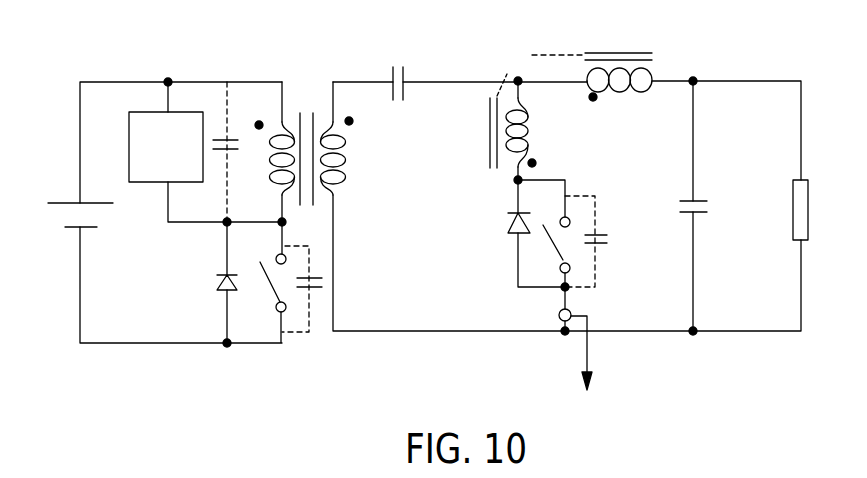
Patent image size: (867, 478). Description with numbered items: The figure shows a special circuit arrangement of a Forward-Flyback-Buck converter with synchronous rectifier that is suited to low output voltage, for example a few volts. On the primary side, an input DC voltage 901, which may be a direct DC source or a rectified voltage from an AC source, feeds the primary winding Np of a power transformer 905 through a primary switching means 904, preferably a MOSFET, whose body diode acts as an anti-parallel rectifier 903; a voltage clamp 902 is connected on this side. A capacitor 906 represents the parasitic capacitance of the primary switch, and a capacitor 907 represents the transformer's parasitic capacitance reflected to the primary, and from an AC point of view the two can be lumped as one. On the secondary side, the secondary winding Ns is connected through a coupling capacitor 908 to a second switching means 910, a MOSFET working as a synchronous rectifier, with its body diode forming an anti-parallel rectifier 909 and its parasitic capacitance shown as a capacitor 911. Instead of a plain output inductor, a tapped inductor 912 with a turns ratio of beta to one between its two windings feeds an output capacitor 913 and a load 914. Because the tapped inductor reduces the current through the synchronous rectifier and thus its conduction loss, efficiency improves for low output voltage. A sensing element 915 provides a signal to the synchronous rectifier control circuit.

The input DC voltage 901 is at (68, 194).
The voltage clamp 902 is at (182, 112).
The anti-parallel rectifier 903 is at (213, 295).
The primary switching means 904 is at (272, 308).
The power transformer 905 is at (320, 110).
The parasitic capacitance of the primary switching means 906 is at (221, 151).
The parasitic capacitance of the transformer 907 is at (313, 290).
The coupling capacitor 908 is at (403, 55).
The anti-parallel rectifier 909 is at (508, 228).
The second switching means 910 is at (562, 242).
The parasitic capacitance of the second switching means 911 is at (606, 235).
The tapped inductor 912 is at (655, 57).
The output capacitor 913 is at (710, 214).
The load 914 is at (807, 247).
The current sensor 915 is at (558, 316).